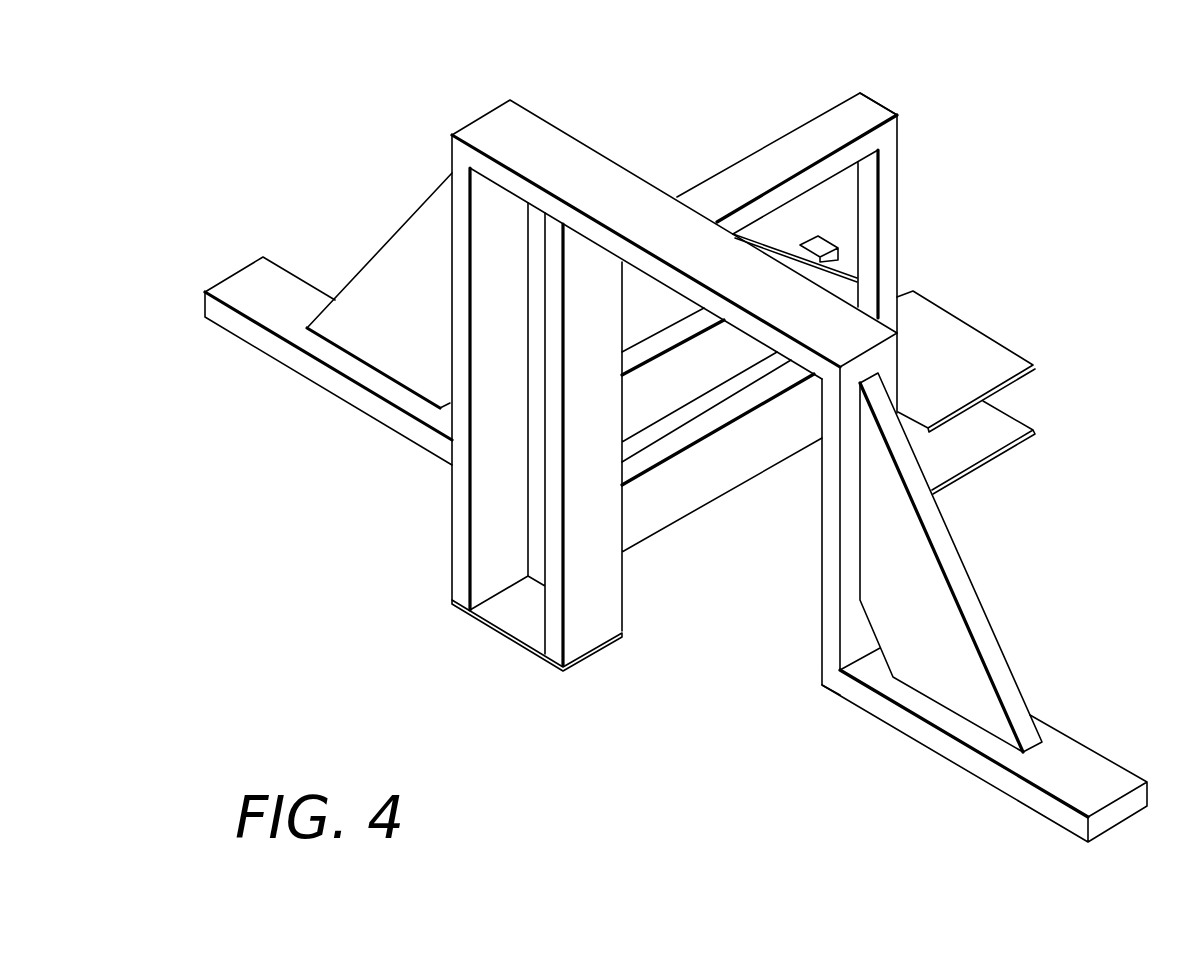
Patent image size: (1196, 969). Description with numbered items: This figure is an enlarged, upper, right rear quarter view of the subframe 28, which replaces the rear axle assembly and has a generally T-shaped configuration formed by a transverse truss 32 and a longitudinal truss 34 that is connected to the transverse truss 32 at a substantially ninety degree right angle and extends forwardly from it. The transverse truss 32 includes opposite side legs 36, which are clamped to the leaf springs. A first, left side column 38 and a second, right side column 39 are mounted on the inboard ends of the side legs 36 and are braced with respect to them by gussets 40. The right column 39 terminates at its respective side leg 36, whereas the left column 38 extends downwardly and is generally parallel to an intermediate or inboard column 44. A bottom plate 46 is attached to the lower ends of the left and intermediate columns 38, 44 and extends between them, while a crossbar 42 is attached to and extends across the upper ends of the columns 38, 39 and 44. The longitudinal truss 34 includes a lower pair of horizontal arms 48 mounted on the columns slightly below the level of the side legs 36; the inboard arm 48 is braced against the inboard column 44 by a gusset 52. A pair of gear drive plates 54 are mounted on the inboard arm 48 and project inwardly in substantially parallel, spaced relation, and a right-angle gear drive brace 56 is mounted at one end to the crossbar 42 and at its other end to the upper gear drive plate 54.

The subframe 28 is at (262, 600).
The transverse truss 32 is at (446, 130).
The longitudinal truss 34 is at (903, 112).
The side legs 36 is at (228, 330).
The first (left side) column 38 is at (452, 494).
The second (right side) column 39 is at (822, 636).
The gussets 40 is at (414, 314).
The crossbar 42 is at (588, 146).
The intermediate or inboard column 44 is at (622, 585).
The bottom plate 46 is at (508, 637).
The horizontal arms 48 is at (696, 391).
The gusset 52 is at (797, 246).
The gear drive plates 54 is at (1037, 367).
The gear drive brace 56 is at (868, 58).